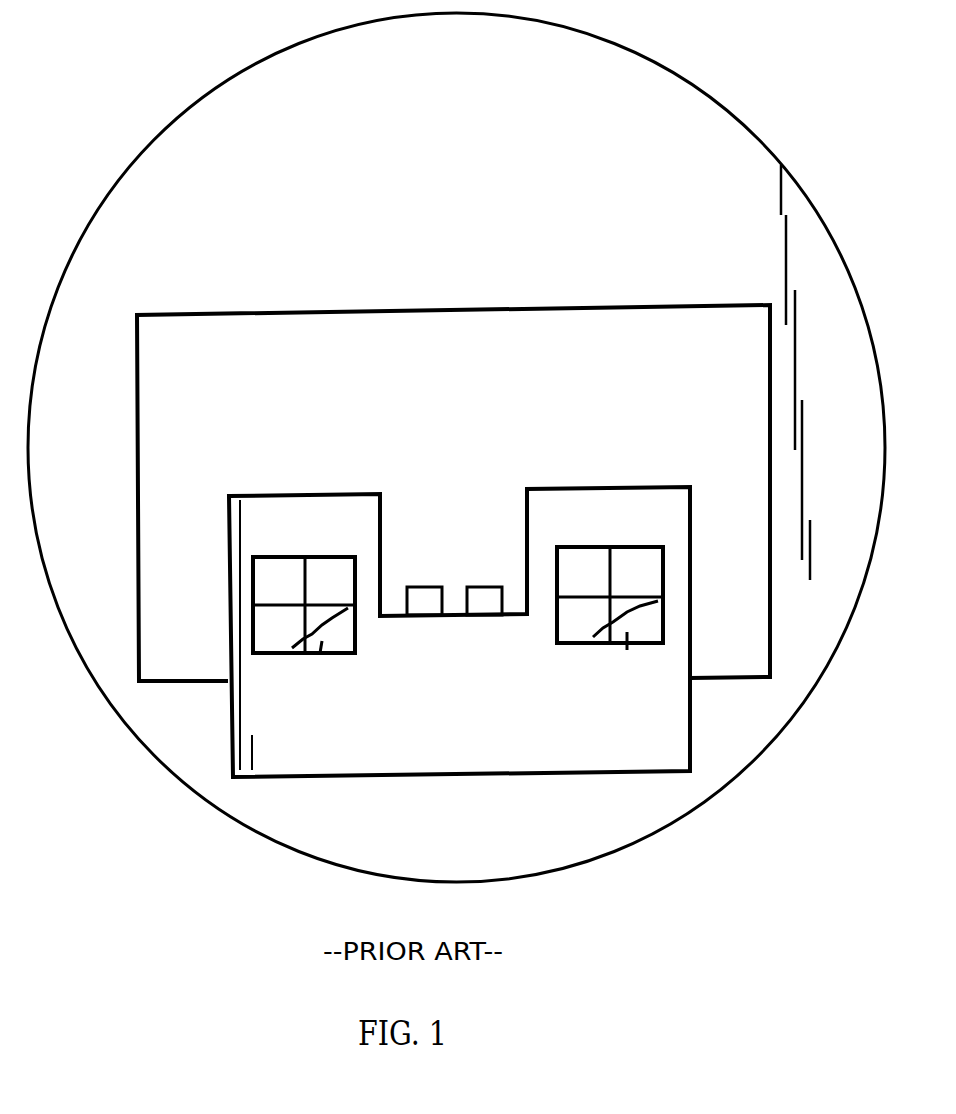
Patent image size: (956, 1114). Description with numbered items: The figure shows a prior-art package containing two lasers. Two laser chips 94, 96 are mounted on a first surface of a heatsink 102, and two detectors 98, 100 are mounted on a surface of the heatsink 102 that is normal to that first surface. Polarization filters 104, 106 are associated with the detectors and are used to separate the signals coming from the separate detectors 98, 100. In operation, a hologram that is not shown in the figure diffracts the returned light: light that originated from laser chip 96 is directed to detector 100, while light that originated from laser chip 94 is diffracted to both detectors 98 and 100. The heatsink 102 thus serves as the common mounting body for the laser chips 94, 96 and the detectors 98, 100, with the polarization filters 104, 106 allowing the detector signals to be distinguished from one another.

The laser chip 94 is at (420, 587).
The laser chip 96 is at (478, 587).
The detector 98 is at (313, 557).
The detector 100 is at (616, 547).
The heatsink 102 is at (674, 722).
The polarization filter 104 is at (318, 654).
The polarization filter 106 is at (620, 643).